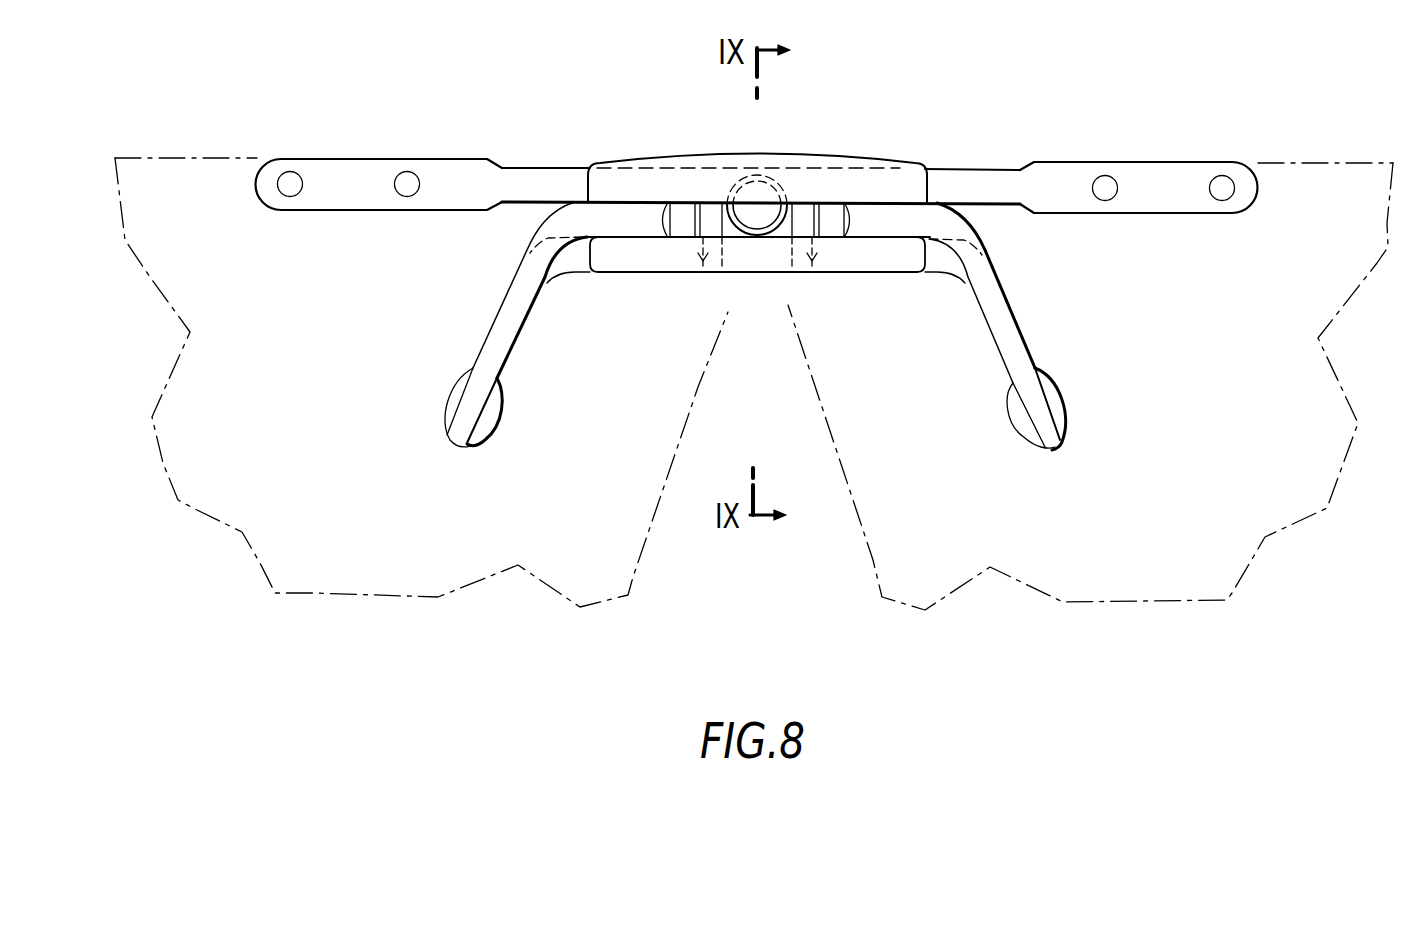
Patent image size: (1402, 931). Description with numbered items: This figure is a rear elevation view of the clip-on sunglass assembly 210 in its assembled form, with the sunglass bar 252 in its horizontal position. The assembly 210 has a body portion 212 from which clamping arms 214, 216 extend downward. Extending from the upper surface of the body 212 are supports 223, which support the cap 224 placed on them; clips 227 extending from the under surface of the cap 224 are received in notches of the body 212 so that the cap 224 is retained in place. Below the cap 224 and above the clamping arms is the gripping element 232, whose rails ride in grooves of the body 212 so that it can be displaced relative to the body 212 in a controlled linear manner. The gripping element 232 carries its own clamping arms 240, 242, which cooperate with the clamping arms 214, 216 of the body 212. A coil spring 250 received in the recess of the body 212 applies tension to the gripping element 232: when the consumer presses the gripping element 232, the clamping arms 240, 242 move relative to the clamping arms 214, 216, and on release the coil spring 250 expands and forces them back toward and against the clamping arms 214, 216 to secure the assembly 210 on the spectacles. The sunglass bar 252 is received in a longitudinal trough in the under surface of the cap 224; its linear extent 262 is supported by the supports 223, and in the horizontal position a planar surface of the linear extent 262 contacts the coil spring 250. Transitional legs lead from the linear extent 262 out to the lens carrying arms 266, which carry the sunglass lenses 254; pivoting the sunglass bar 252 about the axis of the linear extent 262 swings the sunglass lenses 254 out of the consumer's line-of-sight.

The assembly 210 is at (935, 133).
The body portion 212 is at (625, 263).
The clamping arm 214 is at (571, 262).
The clamping arm 216 is at (943, 263).
The supports 223 is at (680, 212).
The cap 224 is at (797, 155).
The clips 227 is at (703, 270).
The gripping element 232 is at (882, 228).
The clamping arm 240 is at (536, 235).
The clamping arm 242 is at (984, 232).
The coil spring 250 is at (757, 237).
The sunglass bar 252 is at (528, 168).
The sunglass lenses 254 is at (332, 406).
The linear extent 262 is at (718, 176).
The lens carrying arms 266 is at (335, 159).